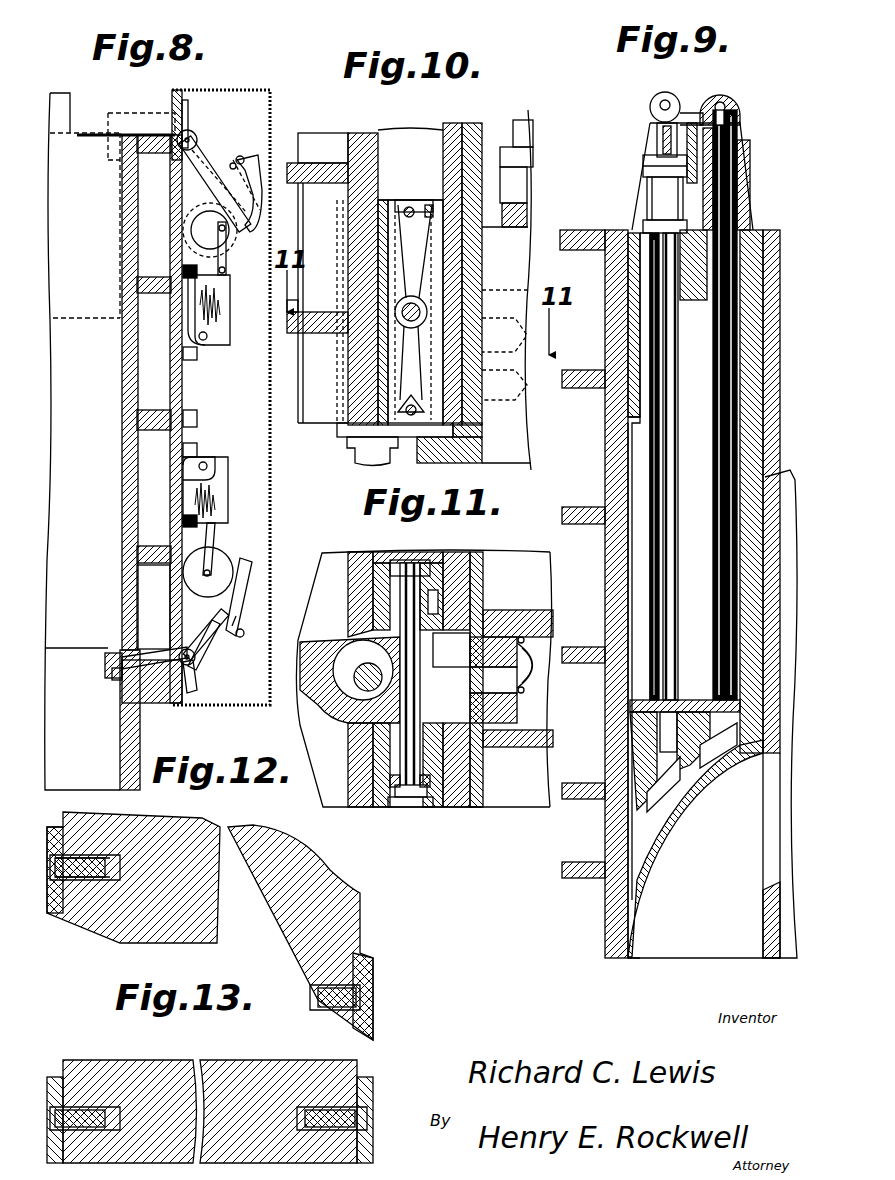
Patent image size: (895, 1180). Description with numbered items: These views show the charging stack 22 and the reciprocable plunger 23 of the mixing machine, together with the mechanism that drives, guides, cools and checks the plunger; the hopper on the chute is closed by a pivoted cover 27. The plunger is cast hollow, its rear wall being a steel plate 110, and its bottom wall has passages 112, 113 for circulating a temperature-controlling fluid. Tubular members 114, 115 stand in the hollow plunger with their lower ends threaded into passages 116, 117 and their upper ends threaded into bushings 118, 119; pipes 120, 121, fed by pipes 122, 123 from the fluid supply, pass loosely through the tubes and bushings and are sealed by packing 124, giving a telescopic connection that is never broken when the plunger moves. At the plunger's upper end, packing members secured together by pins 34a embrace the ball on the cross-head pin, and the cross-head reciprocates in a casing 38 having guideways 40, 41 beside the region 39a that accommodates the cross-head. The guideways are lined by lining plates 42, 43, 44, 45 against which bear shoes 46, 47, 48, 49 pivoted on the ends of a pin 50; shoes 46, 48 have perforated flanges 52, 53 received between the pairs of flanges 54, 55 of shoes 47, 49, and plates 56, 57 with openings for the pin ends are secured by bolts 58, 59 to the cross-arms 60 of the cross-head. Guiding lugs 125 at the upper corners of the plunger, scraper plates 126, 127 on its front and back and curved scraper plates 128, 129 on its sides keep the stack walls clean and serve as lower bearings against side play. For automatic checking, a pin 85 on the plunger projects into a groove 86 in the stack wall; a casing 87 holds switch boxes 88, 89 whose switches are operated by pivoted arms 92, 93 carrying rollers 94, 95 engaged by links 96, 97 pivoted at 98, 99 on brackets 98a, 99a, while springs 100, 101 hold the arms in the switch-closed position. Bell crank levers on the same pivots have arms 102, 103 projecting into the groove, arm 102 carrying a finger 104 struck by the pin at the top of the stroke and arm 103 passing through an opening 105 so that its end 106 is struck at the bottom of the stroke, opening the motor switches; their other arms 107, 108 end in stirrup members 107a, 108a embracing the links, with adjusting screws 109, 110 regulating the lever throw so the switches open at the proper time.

In FIG. 9, the charging chute or stack 22 is at (640, 882).
In FIG. 12, the reciprocable plunger 23 is at (283, 902).
In FIG. 13, the reciprocable plunger 23 is at (227, 1073).
In FIG. 10, the reciprocable plunger 23 is at (528, 264).
In FIG. 9, the reciprocable plunger 23 is at (633, 339).
In FIG. 9, the cover 27 is at (716, 704).
In FIG. 11, the pins 34a is at (526, 641).
In FIG. 10, the casing 38 is at (357, 140).
In FIG. 11, the boss 39a is at (330, 654).
In FIG. 11, the guideway 40 is at (350, 560).
In FIG. 11, the guideway 41 is at (430, 800).
In FIG. 11, the lining plate 42 is at (380, 560).
In FIG. 11, the lining plate 43 is at (468, 560).
In FIG. 10, the lining plate 44 is at (380, 151).
In FIG. 11, the lining plate 44 is at (370, 800).
In FIG. 10, the lining plate 45 is at (445, 159).
In FIG. 11, the lining plate 45 is at (463, 806).
In FIG. 11, the shoe 46 is at (385, 594).
In FIG. 11, the shoe 47 is at (470, 581).
In FIG. 10, the shoe 48 is at (380, 267).
In FIG. 11, the shoe 48 is at (375, 763).
In FIG. 10, the shoe 49 is at (425, 268).
In FIG. 11, the shoe 49 is at (440, 779).
In FIG. 10, the pin 50 is at (393, 322).
In FIG. 11, the pin 50 is at (421, 572).
In FIG. 11, the perforated flange 52 is at (445, 603).
In FIG. 11, the perforated flange 53 is at (520, 752).
In FIG. 11, the pair of flanges 54 is at (428, 510).
In FIG. 11, the pair of flanges 55 is at (397, 800).
In FIG. 11, the plate 56 is at (403, 800).
In FIG. 11, the plate 57 is at (405, 565).
In FIG. 10, the bolts 58 is at (410, 206).
In FIG. 10, the bolts 59 is at (423, 426).
In FIG. 10, the cross-arms 60 is at (430, 212).
In FIG. 8, the pin 85 is at (120, 660).
In FIG. 8, the groove 86 is at (122, 539).
In FIG. 8, the casing 87 is at (244, 158).
In FIG. 8, the switch box 88 is at (232, 323).
In FIG. 8, the switch box 89 is at (223, 485).
In FIG. 8, the pivoted arm 92 is at (227, 264).
In FIG. 8, the pivoted arm 93 is at (220, 534).
In FIG. 8, the roller 94 is at (208, 222).
In FIG. 8, the roller 95 is at (222, 562).
In FIG. 8, the link 96 is at (243, 192).
In FIG. 8, the link 97 is at (238, 629).
In FIG. 8, the pivot 98 is at (188, 649).
In FIG. 8, the bracket 98a is at (193, 686).
In FIG. 8, the pivot 99 is at (194, 135).
In FIG. 8, the bracket 99a is at (193, 100).
In FIG. 8, the spring 100 is at (183, 271).
In FIG. 8, the spring 101 is at (183, 526).
In FIG. 8, the arm 102 is at (145, 128).
In FIG. 8, the arm 103 is at (158, 660).
In FIG. 8, the finger 104 is at (118, 140).
In FIG. 8, the opening 105 is at (145, 637).
In FIG. 8, the end 106 is at (113, 679).
In FIG. 8, the arm 107 is at (210, 165).
In FIG. 8, the stirrup member 107a is at (228, 166).
In FIG. 8, the arm 108 is at (203, 643).
In FIG. 8, the stirrup member 108a is at (236, 617).
In FIG. 8, the adjusting screw 109 is at (258, 153).
In FIG. 8, the adjusting screw 110 is at (241, 640).
In FIG. 9, the adjusting screw 110 is at (628, 489).
In FIG. 9, the passage 112 is at (737, 777).
In FIG. 9, the passage 113 is at (664, 843).
In FIG. 9, the tubular member 114 is at (665, 500).
In FIG. 9, the tubular member 115 is at (712, 522).
In FIG. 9, the passage 116 is at (687, 698).
In FIG. 9, the passage 117 is at (692, 767).
In FIG. 10, the bushing 118 is at (527, 191).
In FIG. 9, the bushing 118 is at (660, 191).
In FIG. 9, the bushing 119 is at (740, 194).
In FIG. 10, the pipe 120 is at (533, 136).
In FIG. 9, the pipe 120 is at (660, 139).
In FIG. 9, the pipe 121 is at (733, 141).
In FIG. 9, the pipe 122 is at (673, 100).
In FIG. 9, the pipe 123 is at (731, 97).
In FIG. 9, the packing 124 is at (748, 174).
In FIG. 8, the guiding lug 125 is at (107, 668).
In FIG. 12, the scraper plate 126 is at (57, 917).
In FIG. 9, the scraper plate 126 is at (763, 758).
In FIG. 12, the scraper plate 127 is at (373, 1021).
In FIG. 9, the scraper plate 127 is at (632, 918).
In FIG. 13, the curved scraper plate 128 is at (50, 1150).
In FIG. 13, the curved scraper plate 129 is at (373, 1150).